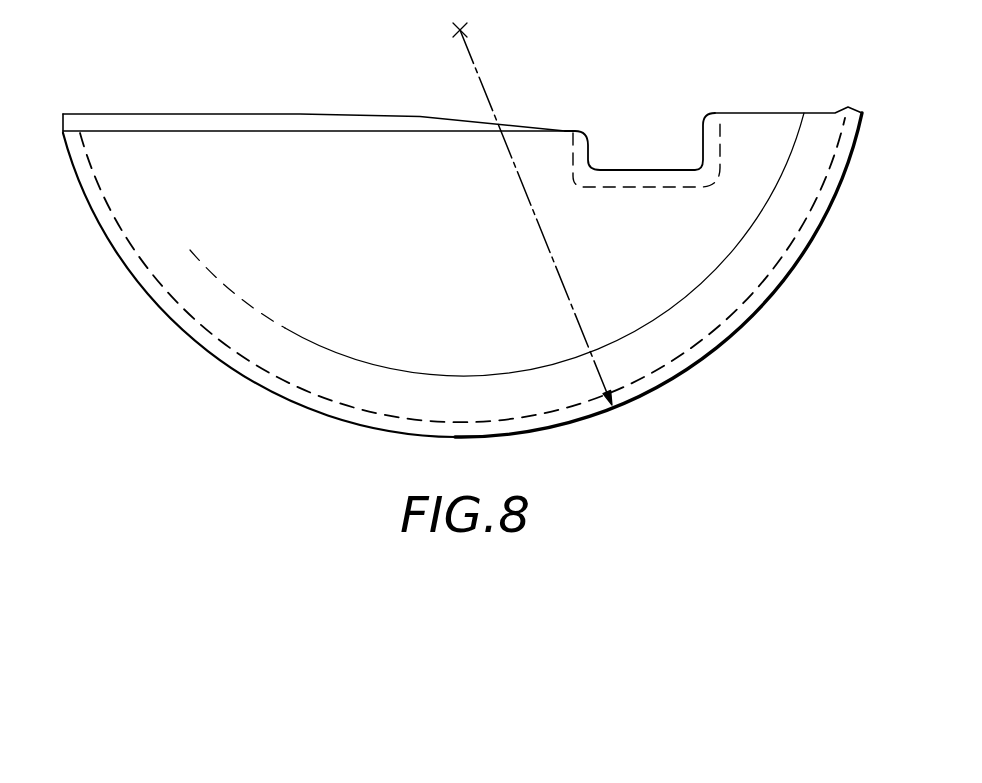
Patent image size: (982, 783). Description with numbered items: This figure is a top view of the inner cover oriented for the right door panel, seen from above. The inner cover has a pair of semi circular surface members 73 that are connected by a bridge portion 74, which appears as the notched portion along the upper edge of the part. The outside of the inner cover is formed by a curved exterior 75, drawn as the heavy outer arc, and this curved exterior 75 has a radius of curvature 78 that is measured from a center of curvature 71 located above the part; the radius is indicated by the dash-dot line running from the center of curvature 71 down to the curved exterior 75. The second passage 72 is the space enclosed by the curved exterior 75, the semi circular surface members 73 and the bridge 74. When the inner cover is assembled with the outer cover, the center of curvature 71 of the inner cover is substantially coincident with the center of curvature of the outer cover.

The center of curvature 71 is at (460, 30).
The second passage 72 is at (230, 143).
The semi circular surface member 73 is at (423, 294).
The bridge portion 74 is at (653, 170).
The curved exterior 75 is at (697, 363).
The radius of curvature 78 is at (556, 262).